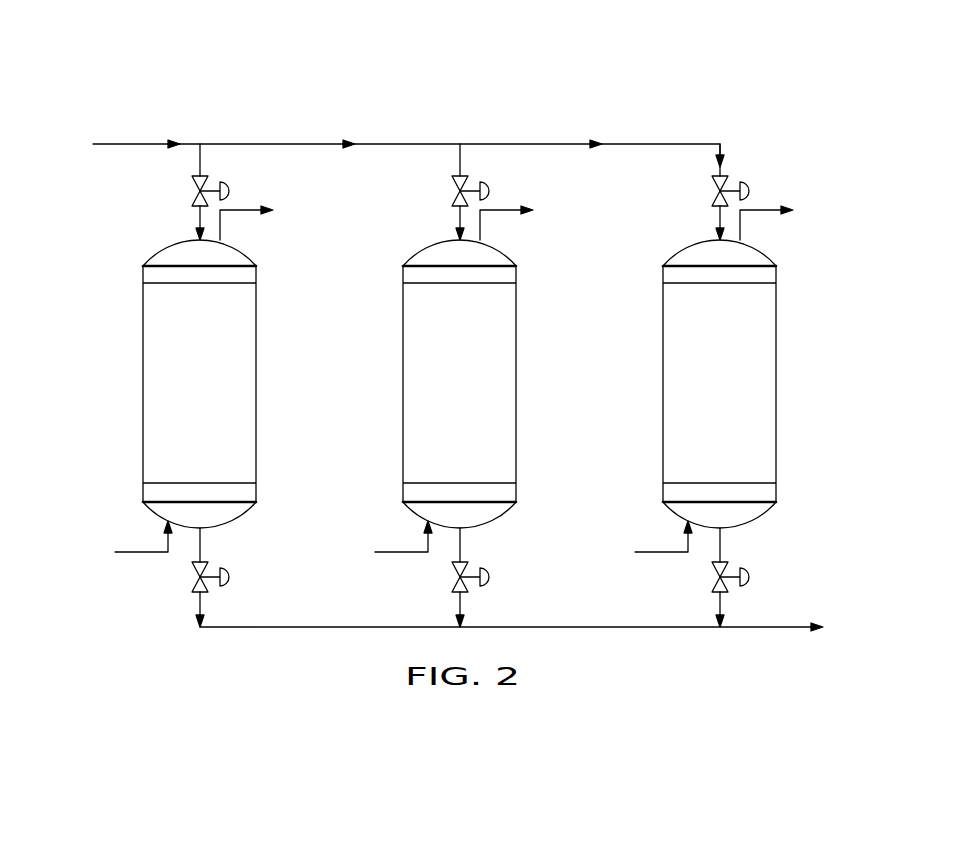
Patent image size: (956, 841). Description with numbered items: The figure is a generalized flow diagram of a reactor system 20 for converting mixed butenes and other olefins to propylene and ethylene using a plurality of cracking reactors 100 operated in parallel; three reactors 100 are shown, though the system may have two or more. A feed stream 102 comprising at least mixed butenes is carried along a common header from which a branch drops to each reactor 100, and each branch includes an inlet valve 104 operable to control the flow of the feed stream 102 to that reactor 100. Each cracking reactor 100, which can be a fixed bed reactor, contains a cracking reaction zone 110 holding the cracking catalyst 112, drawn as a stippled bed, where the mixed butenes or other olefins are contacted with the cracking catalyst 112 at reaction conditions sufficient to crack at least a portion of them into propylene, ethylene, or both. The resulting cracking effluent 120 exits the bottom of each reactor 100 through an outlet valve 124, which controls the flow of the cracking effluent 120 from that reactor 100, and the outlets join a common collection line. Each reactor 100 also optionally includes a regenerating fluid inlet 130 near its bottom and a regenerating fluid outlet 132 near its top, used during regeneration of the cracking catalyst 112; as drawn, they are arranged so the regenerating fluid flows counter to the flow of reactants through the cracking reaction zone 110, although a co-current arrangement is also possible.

The reactor system 20 is at (765, 98).
The cracking reactor 100 is at (143, 316).
The feed stream 102 is at (128, 144).
The inlet valve 104 is at (193, 201).
The cracking reaction zone 110 is at (142, 381).
The cracking catalyst 112 is at (149, 422).
The cracking effluent 120 is at (763, 627).
The outlet valve 124 is at (209, 568).
The regenerating fluid inlet 130 is at (142, 552).
The regenerating fluid outlet 132 is at (244, 210).